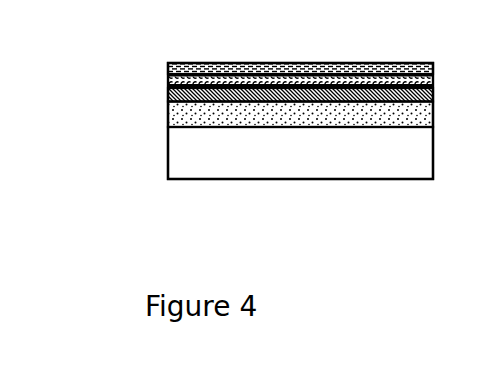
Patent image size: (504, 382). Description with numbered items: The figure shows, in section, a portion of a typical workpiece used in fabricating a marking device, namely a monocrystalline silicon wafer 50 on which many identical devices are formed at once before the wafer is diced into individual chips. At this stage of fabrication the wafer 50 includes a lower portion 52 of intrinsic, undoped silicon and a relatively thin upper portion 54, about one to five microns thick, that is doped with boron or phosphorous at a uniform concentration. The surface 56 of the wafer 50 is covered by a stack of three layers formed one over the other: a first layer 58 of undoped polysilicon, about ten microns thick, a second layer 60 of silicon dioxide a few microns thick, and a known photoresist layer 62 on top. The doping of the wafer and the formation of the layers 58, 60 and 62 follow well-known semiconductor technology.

The monocrystalline silicon wafer 50 is at (293, 112).
The lower portion 52 is at (412, 172).
The upper portion 54 is at (423, 114).
The surface 56 is at (168, 87).
The first layer 58 is at (194, 95).
The second layer 60 is at (237, 80).
The photoresist layer 62 is at (278, 69).